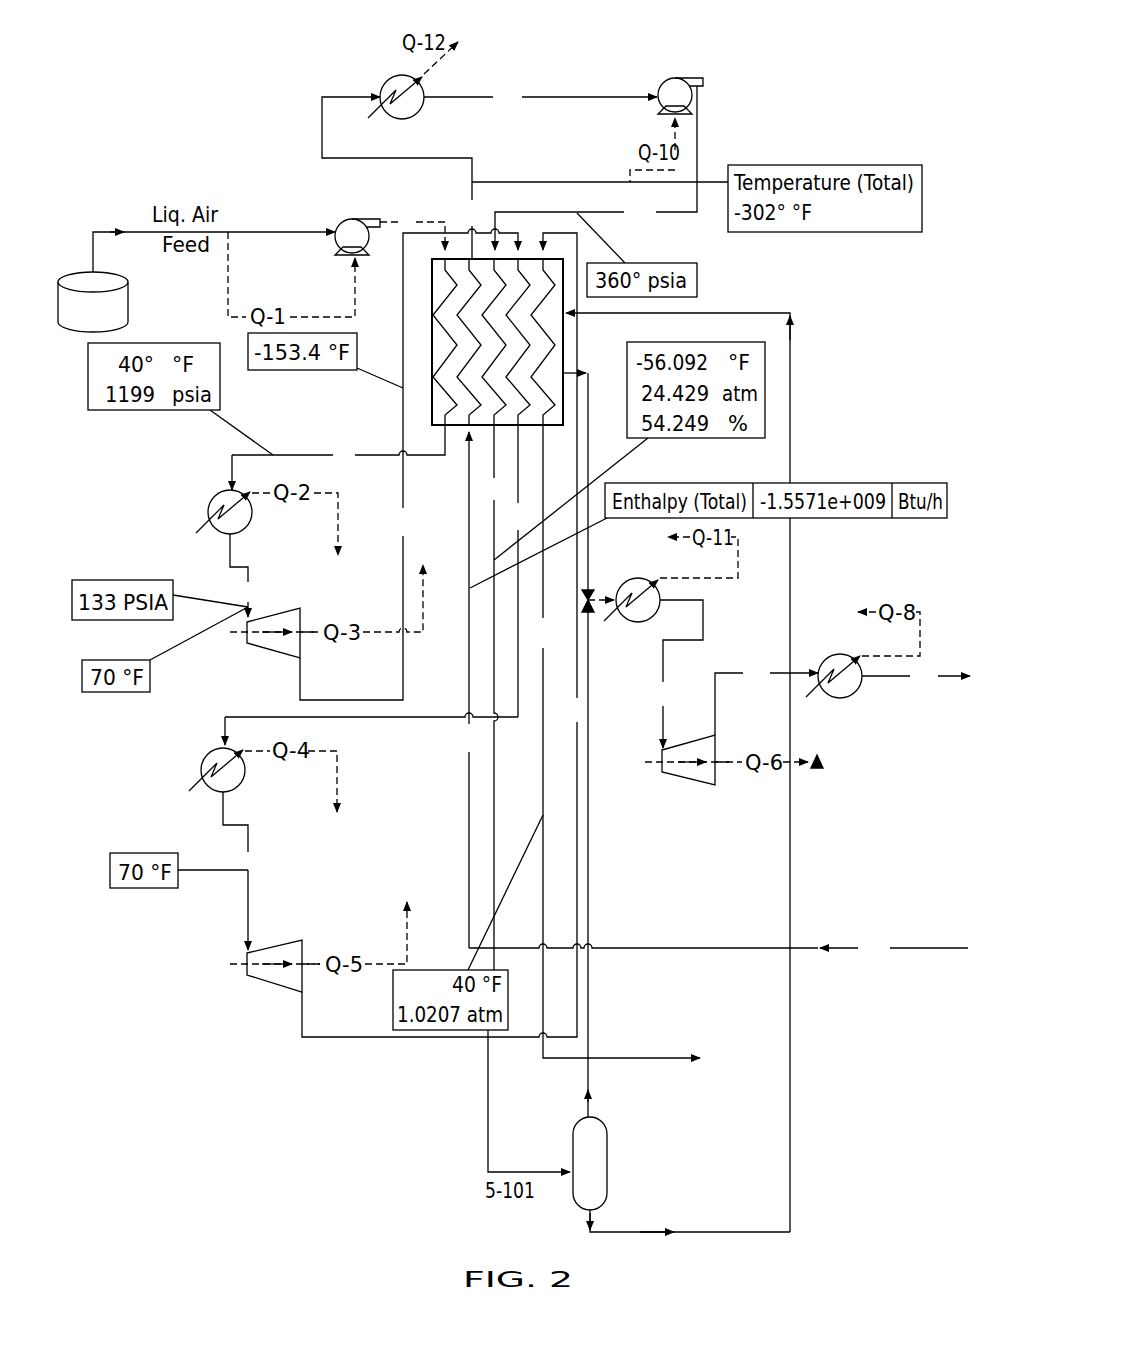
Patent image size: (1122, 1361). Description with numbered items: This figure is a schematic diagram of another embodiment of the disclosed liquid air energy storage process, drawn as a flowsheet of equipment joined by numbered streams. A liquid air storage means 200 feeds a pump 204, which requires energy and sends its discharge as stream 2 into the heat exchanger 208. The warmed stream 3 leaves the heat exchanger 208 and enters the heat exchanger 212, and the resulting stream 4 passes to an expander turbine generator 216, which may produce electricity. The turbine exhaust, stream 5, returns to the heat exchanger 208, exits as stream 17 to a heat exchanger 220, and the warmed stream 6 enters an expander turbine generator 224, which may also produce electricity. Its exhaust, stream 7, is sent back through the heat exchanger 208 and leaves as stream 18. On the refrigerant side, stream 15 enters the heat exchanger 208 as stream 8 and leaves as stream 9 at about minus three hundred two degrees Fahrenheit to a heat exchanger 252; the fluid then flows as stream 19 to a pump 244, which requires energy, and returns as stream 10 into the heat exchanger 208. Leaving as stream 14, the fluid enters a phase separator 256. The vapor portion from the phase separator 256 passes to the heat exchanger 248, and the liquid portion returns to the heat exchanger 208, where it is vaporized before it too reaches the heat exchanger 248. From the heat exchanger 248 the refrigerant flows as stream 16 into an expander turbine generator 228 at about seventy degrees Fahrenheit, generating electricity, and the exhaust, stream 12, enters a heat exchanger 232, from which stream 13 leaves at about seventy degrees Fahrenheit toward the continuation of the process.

The liquid air storage means 200 is at (128, 310).
The pump 204 is at (343, 223).
The heat exchanger 208 is at (432, 400).
The heat exchanger 212 is at (215, 497).
The expander turbine generator 216 is at (283, 612).
The heat exchanger 220 is at (208, 754).
The expander turbine generator 224 is at (247, 976).
The expander turbine generator 228 is at (662, 773).
The heat exchanger 232 is at (821, 666).
The pump 244 is at (662, 83).
The heat exchanger 248 is at (640, 578).
The heat exchanger 252 is at (385, 80).
The phase separator 256 is at (590, 1163).
The stream 2 is at (412, 229).
The stream 3 is at (338, 457).
The stream 4 is at (241, 575).
The stream 5 is at (409, 464).
The stream 6 is at (238, 871).
The stream 7 is at (442, 635).
The stream 8 is at (467, 690).
The stream 9 is at (399, 178).
The stream 10 is at (596, 168).
The stream 12 is at (766, 698).
The stream 13 is at (916, 675).
The stream 14 is at (526, 798).
The stream 15 is at (718, 948).
The stream 16 is at (679, 674).
The stream 17 is at (376, 585).
The stream 18 is at (616, 741).
The stream 19 is at (540, 96).